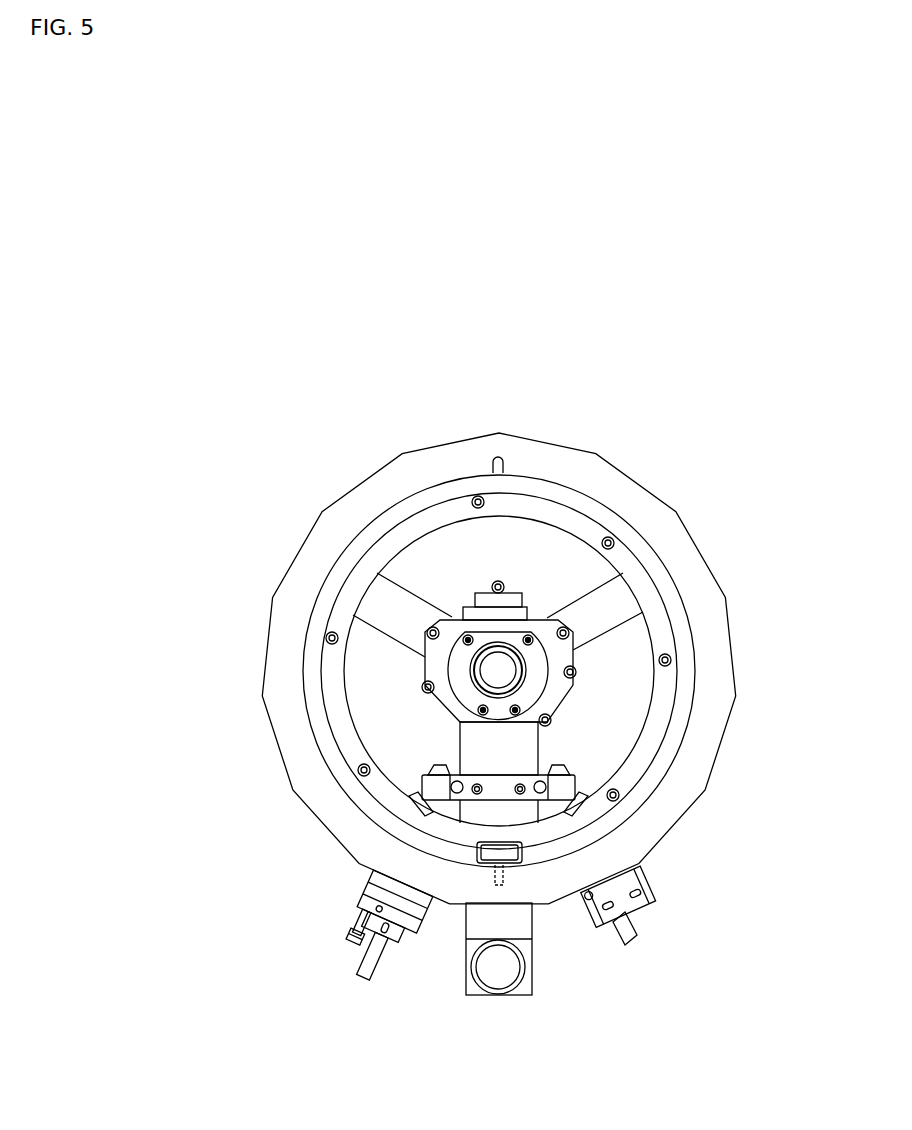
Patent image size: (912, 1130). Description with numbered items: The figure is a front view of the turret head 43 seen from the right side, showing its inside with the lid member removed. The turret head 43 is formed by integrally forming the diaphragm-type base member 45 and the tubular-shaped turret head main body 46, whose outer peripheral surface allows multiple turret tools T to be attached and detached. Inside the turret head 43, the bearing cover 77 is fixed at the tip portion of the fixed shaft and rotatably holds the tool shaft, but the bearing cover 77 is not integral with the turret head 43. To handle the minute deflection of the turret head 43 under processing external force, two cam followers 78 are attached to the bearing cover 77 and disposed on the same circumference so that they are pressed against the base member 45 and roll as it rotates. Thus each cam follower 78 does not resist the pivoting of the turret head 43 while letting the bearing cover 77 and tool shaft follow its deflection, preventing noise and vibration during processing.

The turret head 43 is at (505, 422).
The base member 45 is at (568, 563).
The turret head main body 46 is at (368, 490).
The bearing cover 77 is at (525, 747).
The cam follower 78 is at (405, 789).
The turret tool T is at (517, 963).